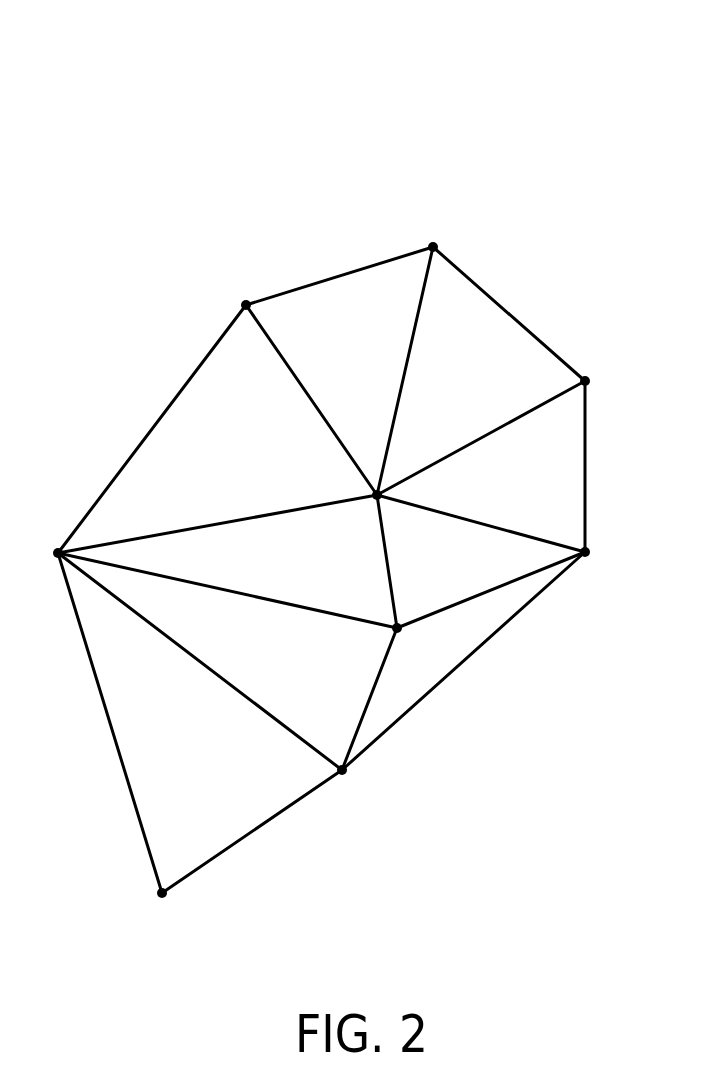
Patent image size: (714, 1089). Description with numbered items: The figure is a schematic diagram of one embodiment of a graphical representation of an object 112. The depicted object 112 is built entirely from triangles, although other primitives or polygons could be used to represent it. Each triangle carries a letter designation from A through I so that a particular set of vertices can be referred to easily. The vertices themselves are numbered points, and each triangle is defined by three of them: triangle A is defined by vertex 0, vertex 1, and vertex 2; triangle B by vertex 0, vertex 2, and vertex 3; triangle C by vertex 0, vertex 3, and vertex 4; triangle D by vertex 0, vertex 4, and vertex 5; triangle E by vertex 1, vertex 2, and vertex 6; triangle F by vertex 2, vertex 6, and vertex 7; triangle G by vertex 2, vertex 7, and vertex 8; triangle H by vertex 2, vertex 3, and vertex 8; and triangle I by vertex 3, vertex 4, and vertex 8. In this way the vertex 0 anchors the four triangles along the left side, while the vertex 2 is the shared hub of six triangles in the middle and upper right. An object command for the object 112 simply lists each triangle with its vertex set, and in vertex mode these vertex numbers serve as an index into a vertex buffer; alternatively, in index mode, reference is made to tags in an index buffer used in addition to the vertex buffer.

The object 112 is at (172, 116).
The vertex 0 is at (48, 554).
The vertex 1 is at (239, 294).
The vertex 2 is at (369, 508).
The vertex 3 is at (405, 639).
The vertex 4 is at (349, 780).
The vertex 5 is at (152, 895).
The vertex 6 is at (443, 239).
The vertex 7 is at (595, 377).
The vertex 8 is at (595, 554).